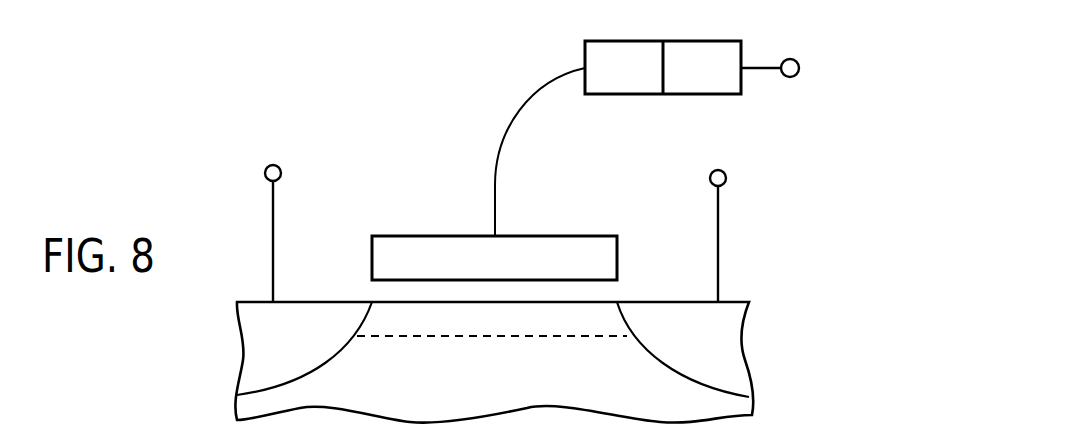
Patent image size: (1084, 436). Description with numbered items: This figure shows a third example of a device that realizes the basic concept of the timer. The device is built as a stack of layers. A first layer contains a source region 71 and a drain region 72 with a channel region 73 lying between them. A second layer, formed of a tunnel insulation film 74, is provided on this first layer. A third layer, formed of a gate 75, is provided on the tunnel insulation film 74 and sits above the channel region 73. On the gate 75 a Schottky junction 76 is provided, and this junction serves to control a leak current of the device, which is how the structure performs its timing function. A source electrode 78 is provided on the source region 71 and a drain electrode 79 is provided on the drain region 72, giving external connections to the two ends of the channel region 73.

The source region 71 is at (248, 322).
The drain region 72 is at (732, 327).
The channel region 73 is at (558, 338).
The tunnel insulation film 74 is at (602, 288).
The gate 75 is at (617, 241).
The Schottky junction 76 is at (741, 88).
The source electrode 78 is at (281, 172).
The drain electrode 79 is at (726, 181).